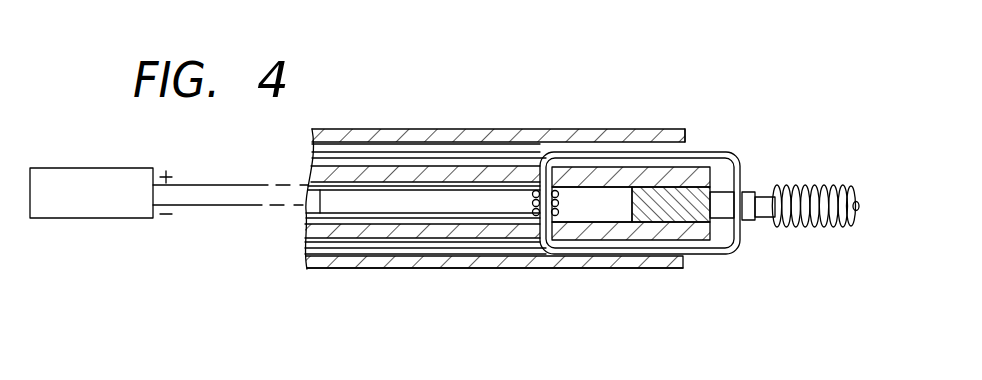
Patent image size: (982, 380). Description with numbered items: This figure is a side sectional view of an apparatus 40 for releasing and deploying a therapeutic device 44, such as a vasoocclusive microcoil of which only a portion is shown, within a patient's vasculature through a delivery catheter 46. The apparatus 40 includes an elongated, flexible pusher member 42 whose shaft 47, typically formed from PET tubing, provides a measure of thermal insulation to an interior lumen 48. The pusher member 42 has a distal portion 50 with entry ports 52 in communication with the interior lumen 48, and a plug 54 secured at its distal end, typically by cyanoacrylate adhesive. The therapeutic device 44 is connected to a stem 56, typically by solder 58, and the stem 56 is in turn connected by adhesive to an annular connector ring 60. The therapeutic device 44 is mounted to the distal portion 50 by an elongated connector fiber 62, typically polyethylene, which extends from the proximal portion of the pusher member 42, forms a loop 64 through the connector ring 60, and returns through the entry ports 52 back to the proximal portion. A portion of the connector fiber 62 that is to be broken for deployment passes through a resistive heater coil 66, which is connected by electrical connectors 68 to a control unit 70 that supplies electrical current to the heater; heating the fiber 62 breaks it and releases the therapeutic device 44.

The apparatus 40 is at (722, 135).
The pusher member 42 is at (660, 172).
The therapeutic device 44 is at (829, 227).
The delivery catheter 46 is at (510, 269).
The shaft 47 is at (333, 238).
The interior lumen 48 is at (597, 189).
The distal portion 50 is at (605, 270).
The entry ports 52 is at (551, 190).
The plug 54 is at (660, 226).
The stem 56 is at (759, 219).
The solder 58 is at (799, 187).
The annular connector ring 60 is at (748, 190).
The connector fiber 62 is at (460, 158).
The loop 64 is at (713, 253).
The resistive heater coil 66 is at (495, 228).
The electrical connectors 68 is at (403, 190).
The control unit 70 is at (90, 219).